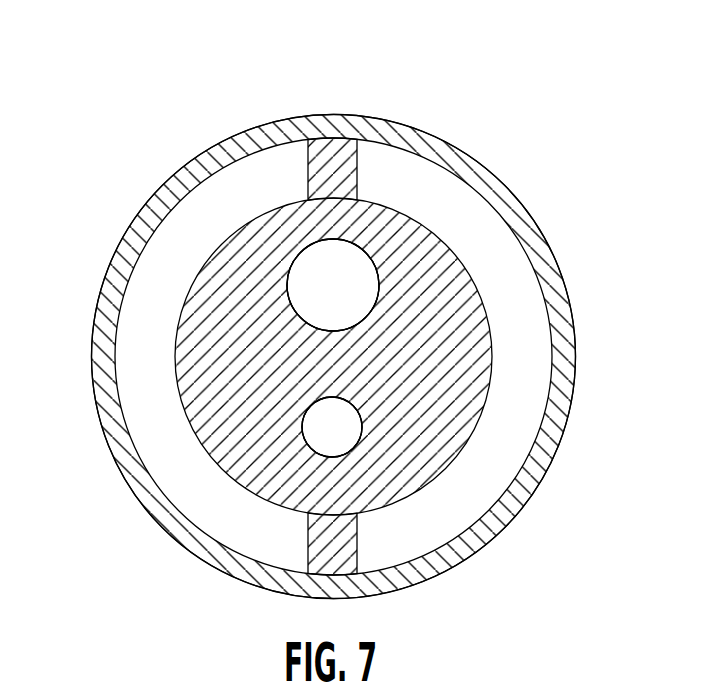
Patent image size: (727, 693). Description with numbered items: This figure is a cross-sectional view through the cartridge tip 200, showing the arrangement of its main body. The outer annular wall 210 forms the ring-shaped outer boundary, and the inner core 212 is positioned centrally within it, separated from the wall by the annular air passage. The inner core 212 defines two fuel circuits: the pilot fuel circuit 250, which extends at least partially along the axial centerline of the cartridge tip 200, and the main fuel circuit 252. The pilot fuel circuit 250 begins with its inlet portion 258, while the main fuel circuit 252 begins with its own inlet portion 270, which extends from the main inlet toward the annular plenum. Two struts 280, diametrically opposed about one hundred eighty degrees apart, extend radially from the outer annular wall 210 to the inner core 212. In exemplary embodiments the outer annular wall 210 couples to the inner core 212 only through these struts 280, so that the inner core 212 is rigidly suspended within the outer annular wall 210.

The cartridge tip 200 is at (148, 90).
The outer annular wall 210 is at (550, 418).
The inner core 212 is at (423, 432).
The pilot fuel circuit 250 is at (318, 431).
The main fuel circuit 252 is at (318, 283).
The inlet portion 258 is at (342, 431).
The inlet portion 270 is at (357, 283).
The struts 280 is at (337, 168).